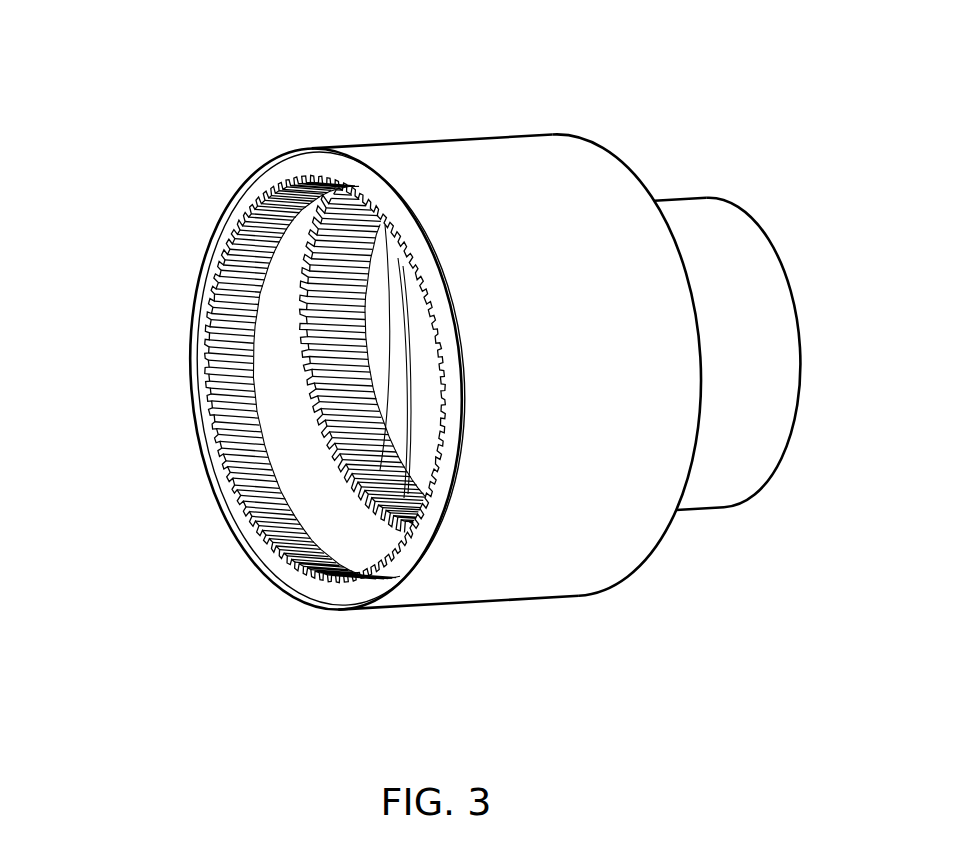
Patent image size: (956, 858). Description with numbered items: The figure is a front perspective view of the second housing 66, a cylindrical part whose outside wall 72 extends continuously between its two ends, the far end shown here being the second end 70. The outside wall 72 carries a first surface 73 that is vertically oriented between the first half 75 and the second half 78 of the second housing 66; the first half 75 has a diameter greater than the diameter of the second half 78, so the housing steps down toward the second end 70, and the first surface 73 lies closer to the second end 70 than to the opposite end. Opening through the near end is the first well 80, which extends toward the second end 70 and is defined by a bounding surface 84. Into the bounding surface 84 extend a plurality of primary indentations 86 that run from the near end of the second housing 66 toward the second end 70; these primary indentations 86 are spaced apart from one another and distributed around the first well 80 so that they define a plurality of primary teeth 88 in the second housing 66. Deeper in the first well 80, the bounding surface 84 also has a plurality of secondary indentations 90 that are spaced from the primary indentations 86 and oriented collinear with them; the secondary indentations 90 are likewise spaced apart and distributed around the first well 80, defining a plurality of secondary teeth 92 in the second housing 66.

The second housing 66 is at (513, 307).
The second end 70 is at (744, 295).
The outside wall 72 is at (537, 150).
The first surface 73 is at (601, 150).
The first half 75 is at (482, 195).
The second half 78 is at (695, 236).
The first well 80 is at (200, 487).
The bounding surface 84 is at (327, 522).
The primary indentations 86 is at (234, 432).
The primary teeth 88 is at (312, 560).
The secondary indentations 90 is at (368, 480).
The secondary teeth 92 is at (318, 305).